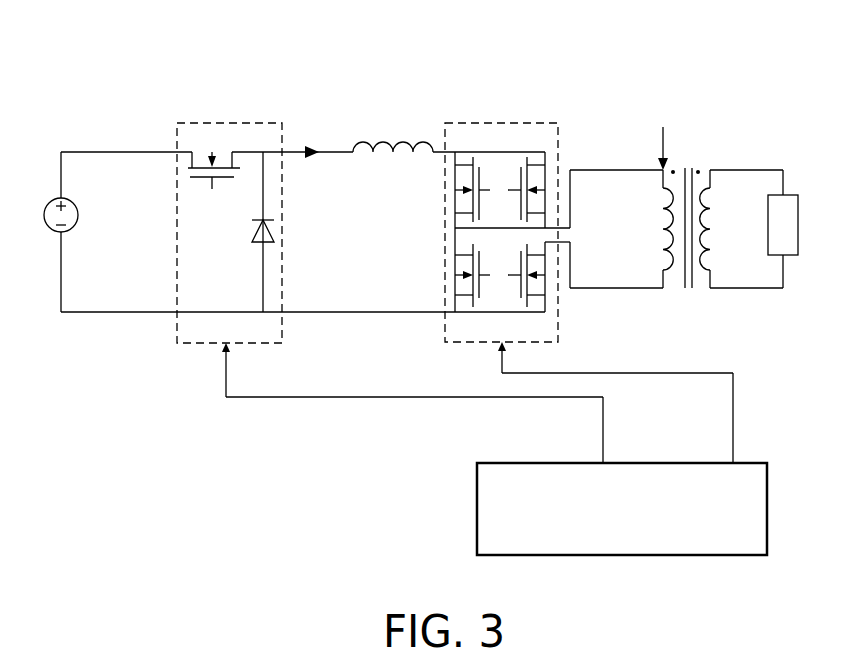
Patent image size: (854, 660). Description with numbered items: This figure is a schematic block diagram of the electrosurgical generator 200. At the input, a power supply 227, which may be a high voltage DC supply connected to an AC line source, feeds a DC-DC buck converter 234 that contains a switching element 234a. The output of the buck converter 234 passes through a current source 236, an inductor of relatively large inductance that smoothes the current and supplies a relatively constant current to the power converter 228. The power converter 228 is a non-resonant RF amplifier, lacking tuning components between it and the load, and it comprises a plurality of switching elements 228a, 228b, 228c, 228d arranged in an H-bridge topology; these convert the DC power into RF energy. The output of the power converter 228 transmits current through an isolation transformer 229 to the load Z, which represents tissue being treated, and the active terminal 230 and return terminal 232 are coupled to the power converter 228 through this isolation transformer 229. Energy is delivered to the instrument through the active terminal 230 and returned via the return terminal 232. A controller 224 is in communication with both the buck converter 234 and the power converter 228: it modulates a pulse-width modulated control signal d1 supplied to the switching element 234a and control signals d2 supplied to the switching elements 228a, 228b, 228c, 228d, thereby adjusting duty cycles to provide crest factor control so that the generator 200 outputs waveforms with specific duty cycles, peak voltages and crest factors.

The generator 200 is at (103, 53).
The controller 224 is at (490, 462).
The power supply 227 is at (59, 198).
The power converter 228 is at (460, 122).
The switching element 228a is at (455, 220).
The switching element 228b is at (455, 287).
The switching element 228c is at (548, 192).
The switching element 228d is at (548, 302).
The isolation transformer 229 is at (692, 168).
The active terminal 230 is at (762, 170).
The return terminal 232 is at (738, 288).
The DC-DC buck converter 234 is at (203, 123).
The switching element 234a is at (240, 168).
The current source 236 is at (355, 150).